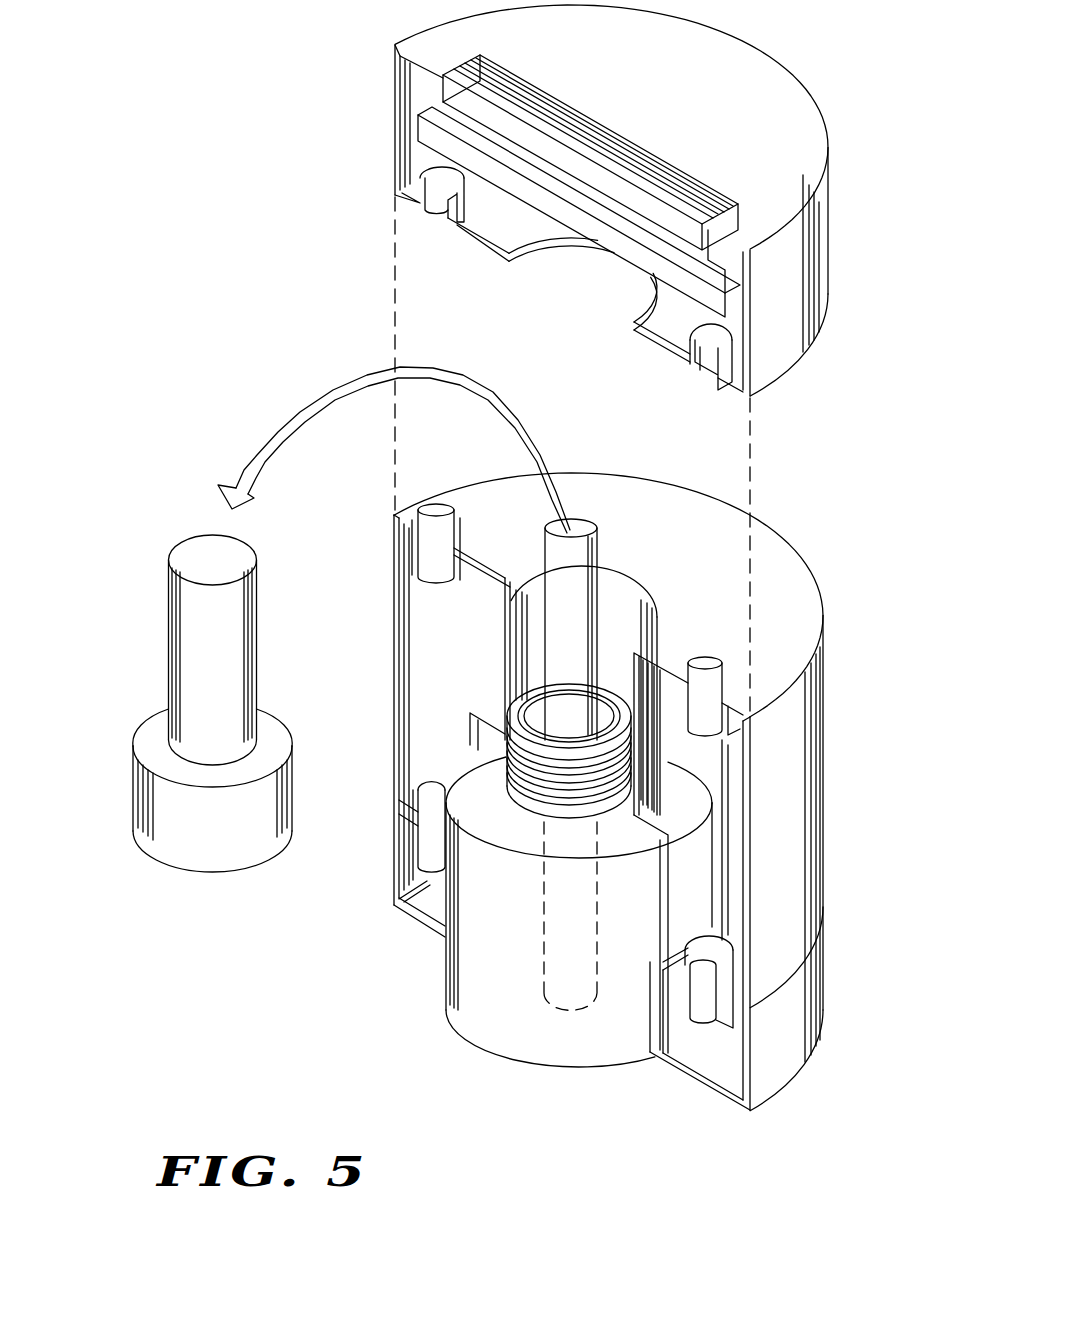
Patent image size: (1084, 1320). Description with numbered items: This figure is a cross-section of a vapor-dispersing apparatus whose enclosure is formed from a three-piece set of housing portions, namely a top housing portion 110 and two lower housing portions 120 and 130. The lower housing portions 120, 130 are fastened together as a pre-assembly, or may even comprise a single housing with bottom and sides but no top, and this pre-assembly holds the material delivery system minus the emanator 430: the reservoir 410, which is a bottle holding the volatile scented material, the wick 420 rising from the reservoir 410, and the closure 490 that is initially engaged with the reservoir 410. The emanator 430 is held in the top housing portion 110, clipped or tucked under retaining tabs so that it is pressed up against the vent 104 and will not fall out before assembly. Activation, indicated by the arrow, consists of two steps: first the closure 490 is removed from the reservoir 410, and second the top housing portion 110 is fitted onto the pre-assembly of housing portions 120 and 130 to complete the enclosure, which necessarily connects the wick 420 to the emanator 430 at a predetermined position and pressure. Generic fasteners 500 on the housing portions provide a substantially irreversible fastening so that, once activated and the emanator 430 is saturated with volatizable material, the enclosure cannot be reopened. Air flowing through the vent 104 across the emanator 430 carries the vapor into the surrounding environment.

The vent 104 is at (636, 124).
The top housing portion 110 is at (797, 117).
The housing portion 120 is at (795, 583).
The housing portion 130 is at (773, 1068).
The reservoir 410 is at (477, 1027).
The wick 420 is at (597, 553).
The emanator 430 is at (625, 252).
The closure 490 is at (168, 645).
The fastener 500 is at (435, 216).